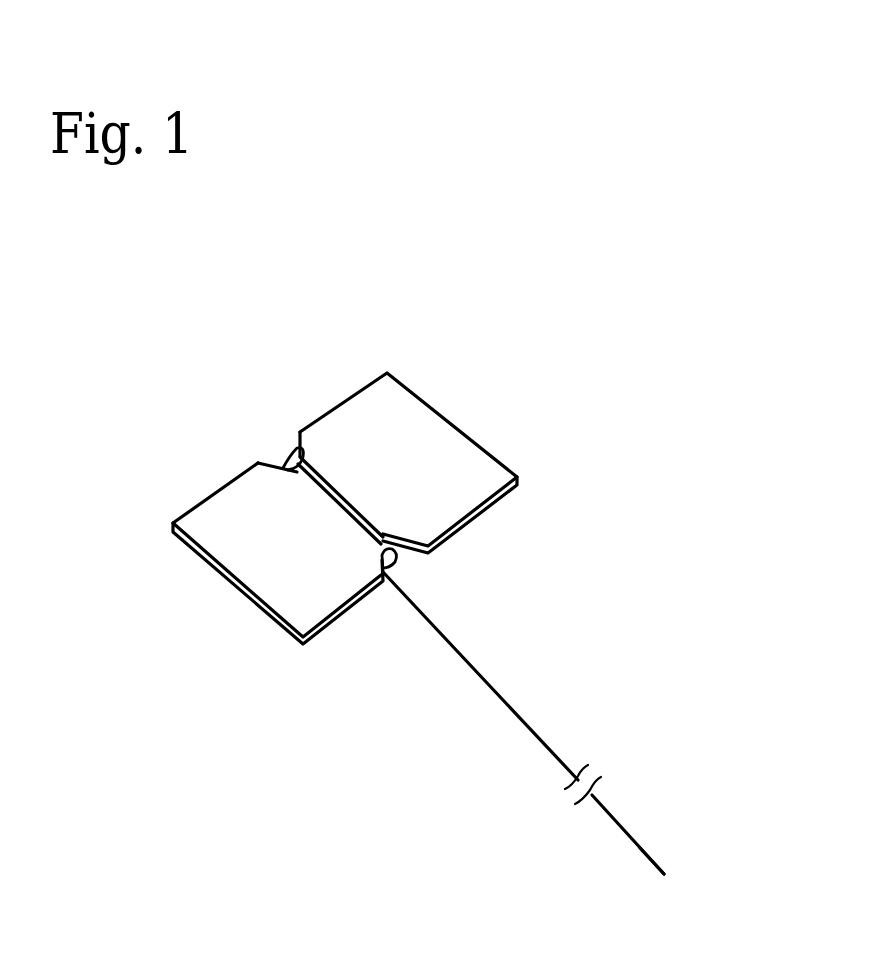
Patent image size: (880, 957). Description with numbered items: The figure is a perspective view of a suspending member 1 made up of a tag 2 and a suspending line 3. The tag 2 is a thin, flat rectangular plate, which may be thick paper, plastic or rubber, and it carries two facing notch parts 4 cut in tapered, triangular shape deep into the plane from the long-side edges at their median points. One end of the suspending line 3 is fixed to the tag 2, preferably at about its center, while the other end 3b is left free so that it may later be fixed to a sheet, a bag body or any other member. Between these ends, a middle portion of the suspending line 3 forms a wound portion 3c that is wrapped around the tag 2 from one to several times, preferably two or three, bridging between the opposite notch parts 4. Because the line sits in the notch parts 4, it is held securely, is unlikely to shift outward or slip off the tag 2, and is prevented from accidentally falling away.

The suspending member 1 is at (466, 611).
The tag 2 is at (420, 413).
The suspending line 3 is at (529, 665).
The other end of the suspending line 3b is at (667, 873).
The wound portion 3c is at (360, 511).
The notch parts 4 is at (268, 460).